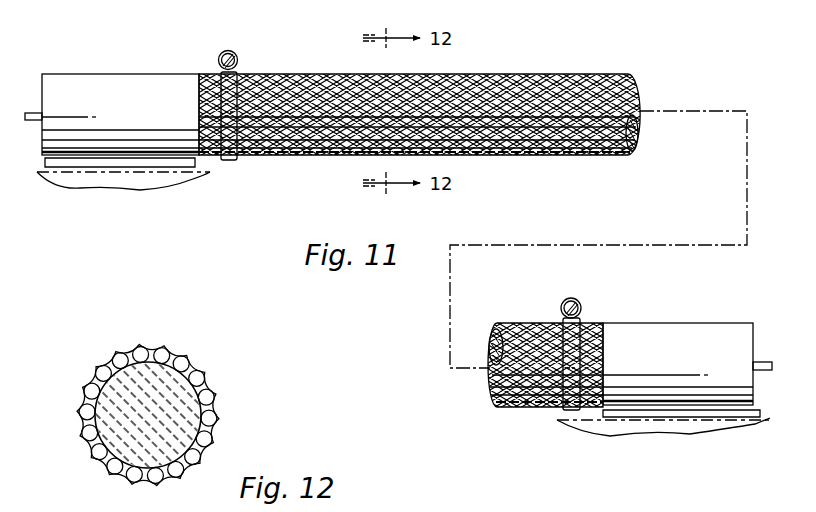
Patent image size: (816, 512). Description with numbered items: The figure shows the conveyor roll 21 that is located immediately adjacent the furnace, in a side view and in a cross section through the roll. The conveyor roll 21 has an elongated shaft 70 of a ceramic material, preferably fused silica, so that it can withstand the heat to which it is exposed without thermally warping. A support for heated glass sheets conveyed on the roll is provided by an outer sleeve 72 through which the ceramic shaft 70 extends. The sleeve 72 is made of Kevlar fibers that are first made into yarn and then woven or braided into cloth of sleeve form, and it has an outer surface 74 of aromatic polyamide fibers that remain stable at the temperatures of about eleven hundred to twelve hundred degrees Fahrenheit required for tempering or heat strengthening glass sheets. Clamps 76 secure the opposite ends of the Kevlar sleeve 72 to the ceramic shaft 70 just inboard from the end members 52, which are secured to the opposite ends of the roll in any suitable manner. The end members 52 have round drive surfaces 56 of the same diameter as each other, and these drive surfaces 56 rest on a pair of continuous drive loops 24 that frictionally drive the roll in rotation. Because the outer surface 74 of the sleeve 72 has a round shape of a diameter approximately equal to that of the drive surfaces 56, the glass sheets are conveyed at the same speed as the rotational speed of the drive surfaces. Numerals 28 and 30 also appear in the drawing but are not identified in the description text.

In FIG. 11, the conveyor roll 21 is at (568, 178).
In FIG. 12, the conveyor roll 21 is at (102, 358).
In FIG. 11, the continuous drive loops 24 is at (38, 172).
In FIG. 11, the ground plane / conductive trace 28 is at (110, 167).
In FIG. 11, the contact pin 30 is at (30, 122).
In FIG. 11, the end members 52 is at (153, 74).
In FIG. 11, the drive surfaces 56 is at (104, 80).
In FIG. 11, the shaft 70 is at (637, 140).
In FIG. 12, the shaft 70 is at (188, 410).
In FIG. 11, the outer sleeve 72 is at (514, 72).
In FIG. 12, the outer sleeve 72 is at (206, 366).
In FIG. 11, the outer surface 74 is at (320, 78).
In FIG. 12, the outer surface 74 is at (215, 428).
In FIG. 11, the clamps 76 is at (230, 85).